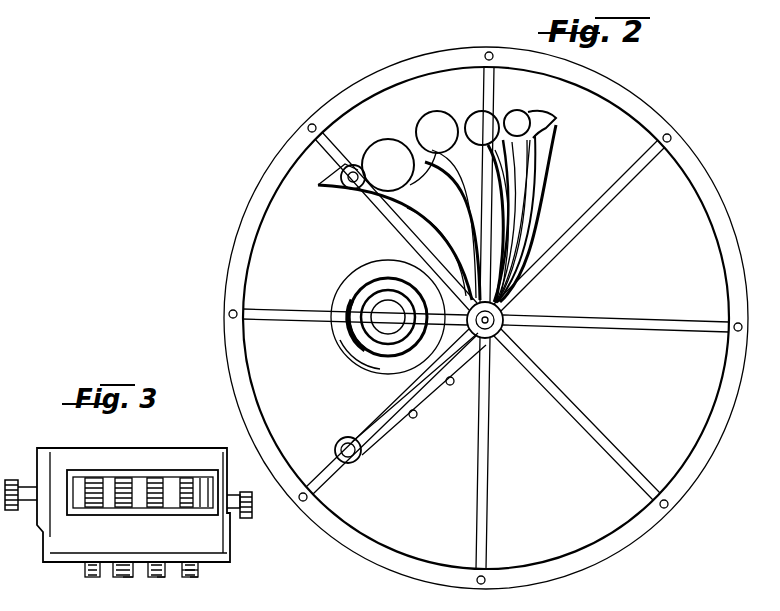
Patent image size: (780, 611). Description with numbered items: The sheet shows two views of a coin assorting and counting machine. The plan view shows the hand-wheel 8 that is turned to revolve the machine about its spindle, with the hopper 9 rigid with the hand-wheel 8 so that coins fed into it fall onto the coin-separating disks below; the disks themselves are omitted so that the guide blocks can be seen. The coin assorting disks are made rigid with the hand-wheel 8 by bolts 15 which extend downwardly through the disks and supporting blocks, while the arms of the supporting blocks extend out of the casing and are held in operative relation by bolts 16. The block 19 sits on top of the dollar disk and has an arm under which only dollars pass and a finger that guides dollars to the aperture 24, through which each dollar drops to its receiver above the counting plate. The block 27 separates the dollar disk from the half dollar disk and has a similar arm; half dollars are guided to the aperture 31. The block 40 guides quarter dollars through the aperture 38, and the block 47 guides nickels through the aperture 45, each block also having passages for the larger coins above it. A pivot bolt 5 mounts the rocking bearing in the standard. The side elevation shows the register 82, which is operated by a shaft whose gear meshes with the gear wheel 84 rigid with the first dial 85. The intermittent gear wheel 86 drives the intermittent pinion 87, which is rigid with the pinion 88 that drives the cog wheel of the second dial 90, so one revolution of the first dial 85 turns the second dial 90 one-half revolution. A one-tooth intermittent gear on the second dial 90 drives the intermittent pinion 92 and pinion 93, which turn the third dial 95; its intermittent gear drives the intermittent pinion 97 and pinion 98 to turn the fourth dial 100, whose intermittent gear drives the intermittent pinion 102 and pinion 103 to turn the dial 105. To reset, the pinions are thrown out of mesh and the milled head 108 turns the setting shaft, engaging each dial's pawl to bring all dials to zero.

In FIG. 2, the pivot bolt 5 is at (543, 173).
In FIG. 2, the hand-wheel 8 is at (245, 368).
In FIG. 2, the hopper 9 is at (378, 365).
In FIG. 2, the bolts 15 is at (349, 175).
In FIG. 2, the bolts 16 is at (352, 452).
In FIG. 2, the block 19 is at (415, 208).
In FIG. 2, the aperture 24 is at (383, 152).
In FIG. 2, the block 27 is at (503, 257).
In FIG. 2, the aperture 31 is at (433, 123).
In FIG. 2, the aperture 38 is at (477, 110).
In FIG. 2, the block 40 is at (518, 225).
In FIG. 2, the aperture 45 is at (518, 122).
In FIG. 2, the block 47 is at (532, 205).
In FIG. 3, the register 82 is at (142, 455).
In FIG. 3, the gear wheel 84 is at (246, 514).
In FIG. 3, the first dial 85 is at (213, 490).
In FIG. 3, the intermittent gear wheel 86 is at (197, 492).
In FIG. 3, the intermittent pinion 87 is at (200, 572).
In FIG. 3, the pinion 88 is at (198, 577).
In FIG. 3, the second dial 90 is at (175, 483).
In FIG. 3, the intermittent pinion 92 is at (170, 577).
In FIG. 3, the pinion 93 is at (162, 577).
In FIG. 3, the third dial 95 is at (142, 485).
In FIG. 3, the intermittent pinion 97 is at (152, 577).
In FIG. 3, the pinion 98 is at (126, 577).
In FIG. 3, the fourth dial 100 is at (107, 485).
In FIG. 3, the intermittent pinion 102 is at (120, 577).
In FIG. 3, the pinion 103 is at (87, 577).
In FIG. 3, the dial 105 is at (77, 480).
In FIG. 3, the milled head 108 is at (14, 510).